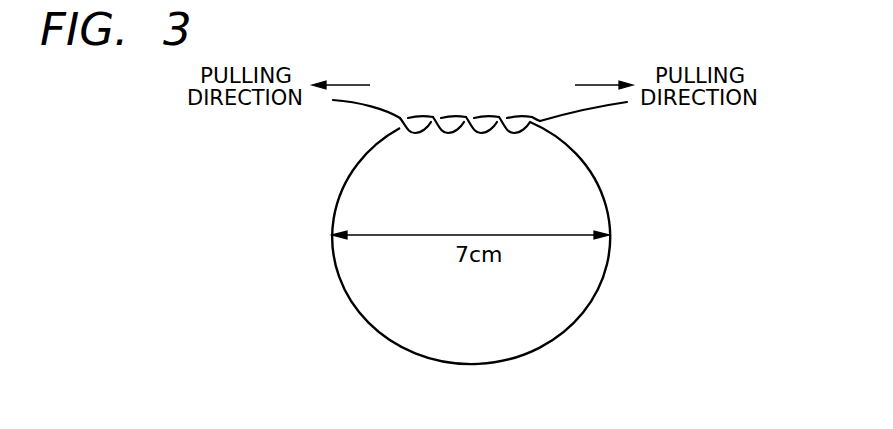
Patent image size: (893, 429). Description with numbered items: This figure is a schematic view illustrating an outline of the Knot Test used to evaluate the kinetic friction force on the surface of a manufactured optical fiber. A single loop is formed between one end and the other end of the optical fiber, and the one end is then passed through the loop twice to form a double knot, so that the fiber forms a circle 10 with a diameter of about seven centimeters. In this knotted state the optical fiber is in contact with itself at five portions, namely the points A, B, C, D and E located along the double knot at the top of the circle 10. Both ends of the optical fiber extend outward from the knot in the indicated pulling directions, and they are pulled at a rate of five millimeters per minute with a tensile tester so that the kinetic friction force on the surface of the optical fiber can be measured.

The ring-shaped string member 10 is at (332, 202).
The contact point A is at (408, 111).
The contact point B is at (443, 111).
The contact point C is at (472, 111).
The contact point D is at (505, 111).
The contact point E is at (532, 111).